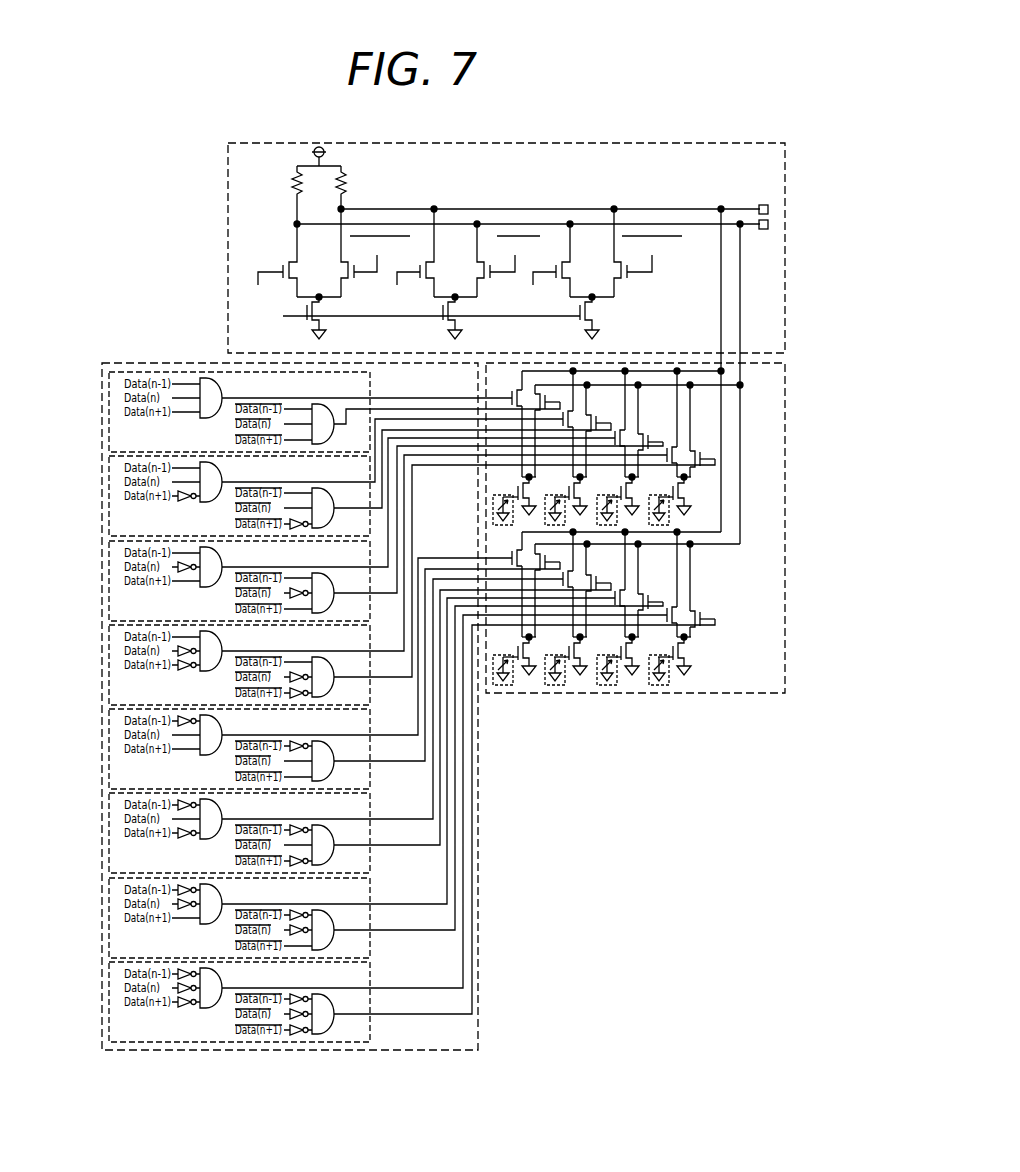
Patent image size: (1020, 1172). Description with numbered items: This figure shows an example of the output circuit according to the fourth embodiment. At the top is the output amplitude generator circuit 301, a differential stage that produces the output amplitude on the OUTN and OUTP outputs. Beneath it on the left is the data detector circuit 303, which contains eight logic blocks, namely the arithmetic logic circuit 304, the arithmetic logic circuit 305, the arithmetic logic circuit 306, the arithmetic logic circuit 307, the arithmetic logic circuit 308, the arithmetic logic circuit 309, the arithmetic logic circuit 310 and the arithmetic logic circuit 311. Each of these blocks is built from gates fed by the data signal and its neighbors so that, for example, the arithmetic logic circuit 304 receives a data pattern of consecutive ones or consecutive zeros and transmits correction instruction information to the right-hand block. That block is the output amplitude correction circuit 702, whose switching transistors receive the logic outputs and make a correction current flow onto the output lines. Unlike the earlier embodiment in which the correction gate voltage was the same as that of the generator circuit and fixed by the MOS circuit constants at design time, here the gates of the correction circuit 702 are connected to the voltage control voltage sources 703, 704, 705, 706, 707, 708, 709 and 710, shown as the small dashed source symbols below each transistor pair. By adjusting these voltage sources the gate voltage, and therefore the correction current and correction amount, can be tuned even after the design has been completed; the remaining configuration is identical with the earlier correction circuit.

The output amplitude generator circuit 301 is at (710, 143).
The data detector circuit 303 is at (256, 673).
The arithmetic logic circuit 304 is at (108, 408).
The arithmetic logic circuit 305 is at (108, 492).
The arithmetic logic circuit 306 is at (108, 577).
The arithmetic logic circuit 307 is at (108, 661).
The arithmetic logic circuit 308 is at (108, 745).
The arithmetic logic circuit 309 is at (108, 829).
The arithmetic logic circuit 310 is at (108, 914).
The arithmetic logic circuit 311 is at (108, 998).
The output amplitude correction circuit 702 is at (631, 488).
The voltage control voltage source 703 is at (503, 495).
The voltage control voltage source 704 is at (555, 495).
The voltage control voltage source 705 is at (607, 495).
The voltage control voltage source 706 is at (659, 495).
The voltage control voltage source 707 is at (503, 686).
The voltage control voltage source 708 is at (555, 686).
The voltage control voltage source 709 is at (607, 686).
The voltage control voltage source 710 is at (659, 686).